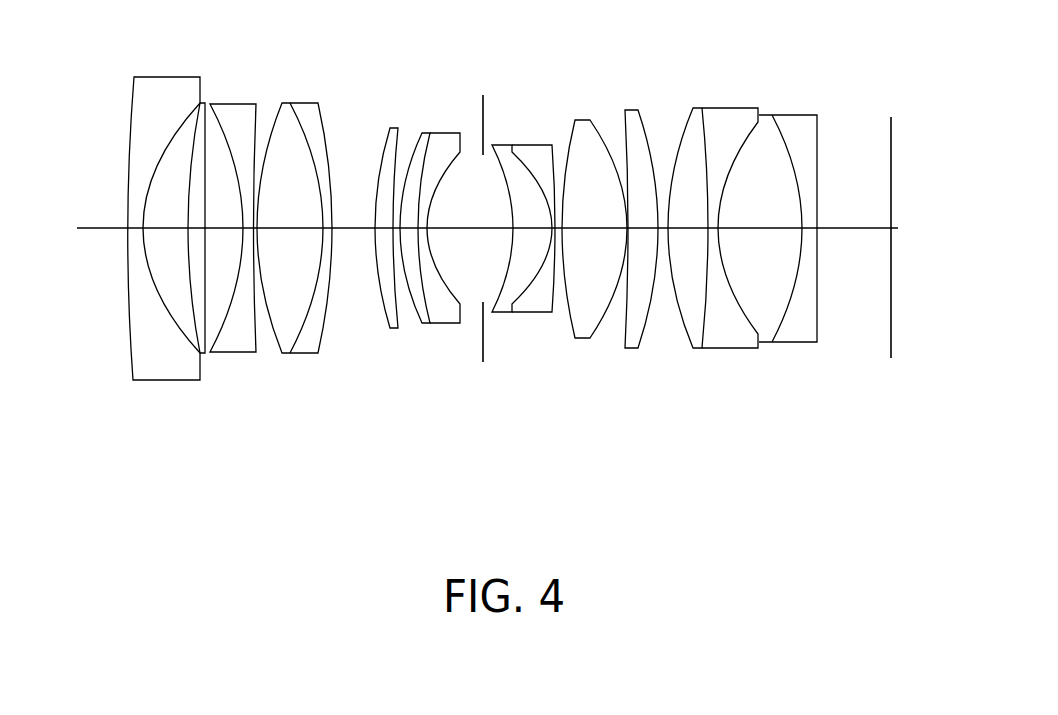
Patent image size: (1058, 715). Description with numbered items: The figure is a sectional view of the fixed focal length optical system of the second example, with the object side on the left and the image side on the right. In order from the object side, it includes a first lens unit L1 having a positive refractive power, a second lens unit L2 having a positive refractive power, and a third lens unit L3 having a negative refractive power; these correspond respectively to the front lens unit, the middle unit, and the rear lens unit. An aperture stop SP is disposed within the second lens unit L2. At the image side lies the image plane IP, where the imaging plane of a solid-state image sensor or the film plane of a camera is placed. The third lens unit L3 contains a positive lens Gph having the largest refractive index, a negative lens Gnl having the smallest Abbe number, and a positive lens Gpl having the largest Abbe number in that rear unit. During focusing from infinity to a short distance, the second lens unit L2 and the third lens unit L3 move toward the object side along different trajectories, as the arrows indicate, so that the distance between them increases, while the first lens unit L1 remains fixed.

The first lens unit L1 is at (339, 408).
The second lens unit L2 is at (652, 373).
The third lens unit L3 is at (746, 268).
The aperture stop SP is at (478, 102).
The image plane IP is at (891, 117).
The positive lens Gph is at (697, 135).
The negative lens Gnl is at (725, 118).
The positive lens Gpl is at (770, 147).